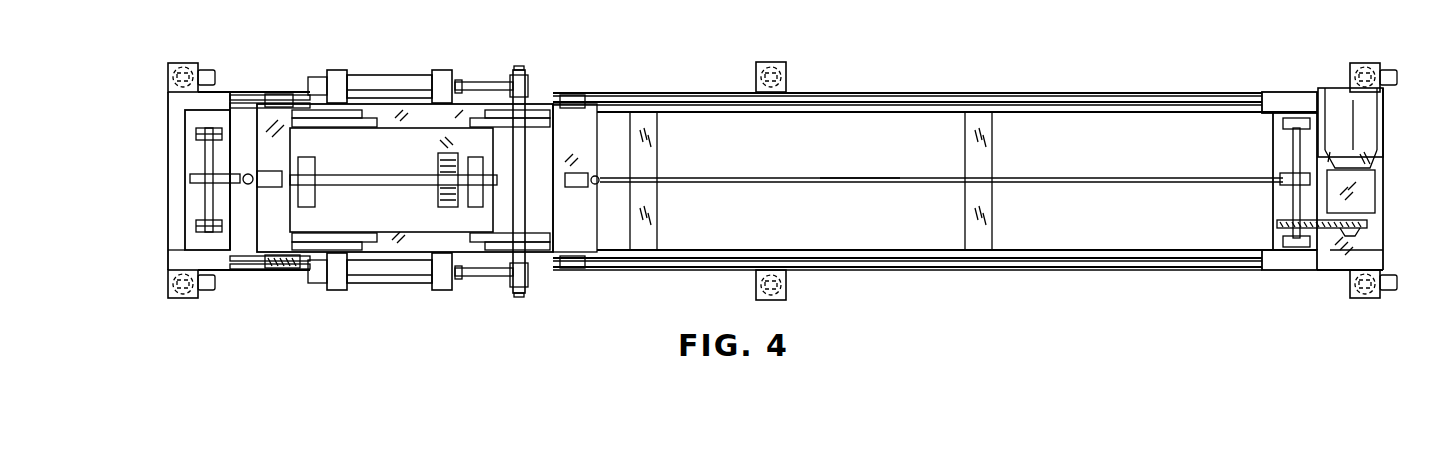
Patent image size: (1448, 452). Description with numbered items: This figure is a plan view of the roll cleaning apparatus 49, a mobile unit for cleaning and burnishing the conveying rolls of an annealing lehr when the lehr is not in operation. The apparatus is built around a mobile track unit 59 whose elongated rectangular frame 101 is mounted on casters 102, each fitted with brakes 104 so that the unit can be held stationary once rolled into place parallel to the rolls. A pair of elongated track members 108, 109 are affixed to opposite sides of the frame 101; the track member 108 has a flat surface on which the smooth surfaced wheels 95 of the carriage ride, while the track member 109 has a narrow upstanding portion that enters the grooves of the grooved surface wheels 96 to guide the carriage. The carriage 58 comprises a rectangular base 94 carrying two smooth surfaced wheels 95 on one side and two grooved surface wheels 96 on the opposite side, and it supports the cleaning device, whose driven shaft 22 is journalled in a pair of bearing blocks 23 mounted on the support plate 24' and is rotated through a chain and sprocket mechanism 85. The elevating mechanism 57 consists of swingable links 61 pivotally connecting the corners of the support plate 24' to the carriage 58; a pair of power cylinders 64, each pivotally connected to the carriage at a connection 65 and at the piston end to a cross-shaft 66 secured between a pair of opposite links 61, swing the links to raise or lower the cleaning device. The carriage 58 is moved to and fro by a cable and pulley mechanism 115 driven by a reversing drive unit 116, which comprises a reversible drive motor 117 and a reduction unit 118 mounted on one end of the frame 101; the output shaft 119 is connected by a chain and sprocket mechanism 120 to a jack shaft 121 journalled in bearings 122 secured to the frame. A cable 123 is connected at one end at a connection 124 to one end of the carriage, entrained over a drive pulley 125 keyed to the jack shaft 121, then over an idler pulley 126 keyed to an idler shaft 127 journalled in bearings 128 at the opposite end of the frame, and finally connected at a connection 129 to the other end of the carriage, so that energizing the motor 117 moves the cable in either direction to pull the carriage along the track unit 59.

The driven shaft 22 is at (340, 178).
The bearing blocks 23 is at (306, 170).
The support plate 24' is at (391, 180).
The roll cleaning apparatus 49 is at (663, 72).
The elevating mechanism 57 is at (470, 80).
The carriage 58 is at (255, 228).
The mobile track unit 59 is at (1046, 94).
The swingable links 61 is at (312, 118).
The power cylinders 64 is at (390, 84).
The cylinder pivotal connection 65 is at (317, 78).
The cross-shaft 66 is at (525, 172).
The chain and sprocket mechanism 85 is at (445, 165).
The base 94 is at (263, 116).
The smooth surfaced wheels 95 is at (280, 98).
The grooved surface wheels 96 is at (282, 270).
The frame 101 is at (1150, 94).
The casters 102 is at (176, 75).
The brakes 104 is at (210, 74).
The track member 108 is at (946, 100).
The track member 109 is at (946, 268).
The cable and pulley mechanism 115 is at (866, 178).
The reversing drive unit 116 is at (1393, 140).
The reversible drive motor 117 is at (1332, 108).
The reduction unit 118 is at (1373, 190).
The output shaft 119 is at (1358, 232).
The chain and sprocket mechanism 120 is at (1335, 238).
The jack shaft 121 is at (1291, 140).
The bearings 122 is at (1292, 118).
The cable 123 is at (768, 178).
The cable connection 124 is at (597, 177).
The drive pulley 125 is at (1282, 178).
The idler pulley 126 is at (190, 178).
The idler shaft 127 is at (207, 160).
The bearings 128 is at (200, 133).
The cable connection 129 is at (248, 174).